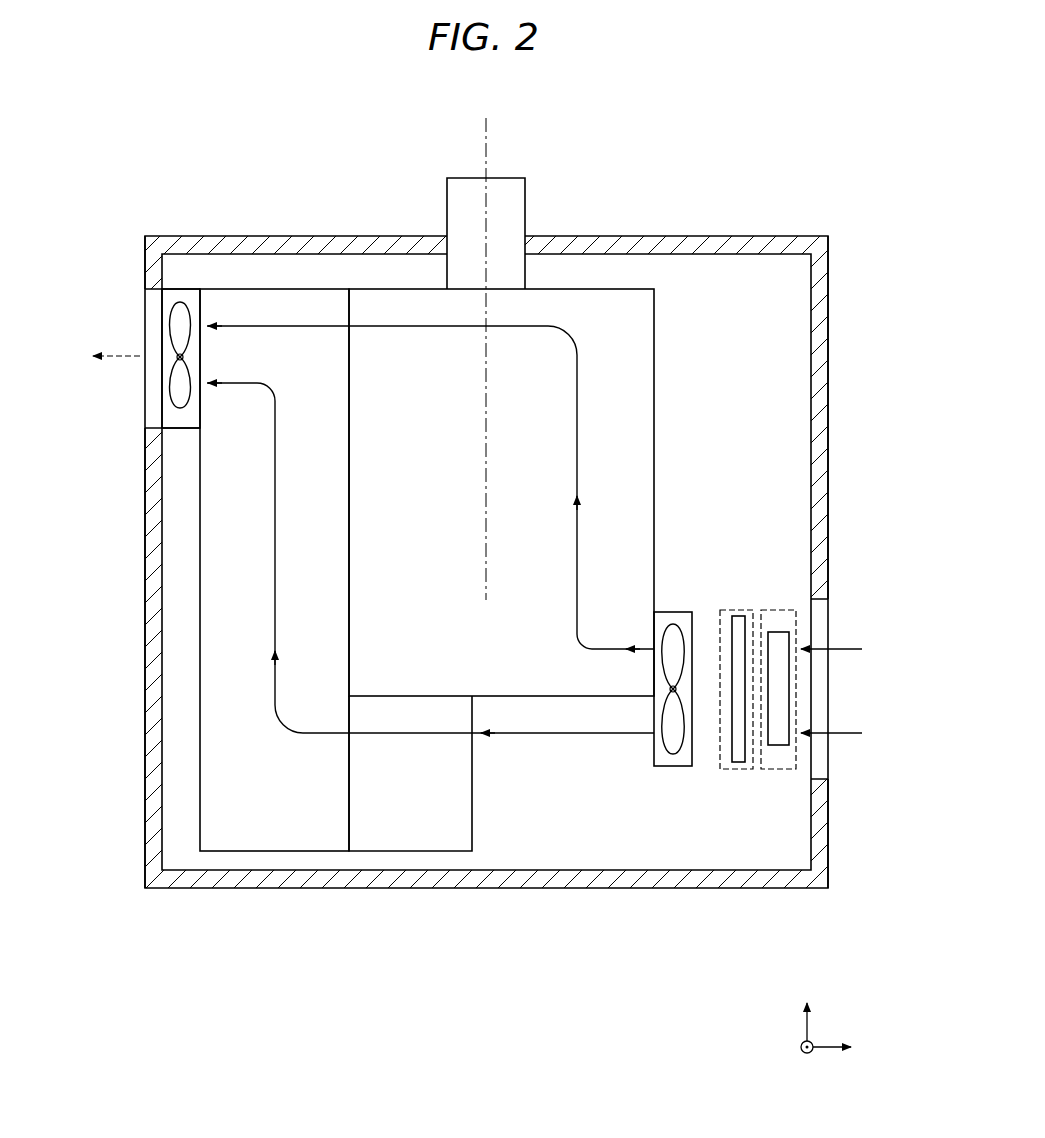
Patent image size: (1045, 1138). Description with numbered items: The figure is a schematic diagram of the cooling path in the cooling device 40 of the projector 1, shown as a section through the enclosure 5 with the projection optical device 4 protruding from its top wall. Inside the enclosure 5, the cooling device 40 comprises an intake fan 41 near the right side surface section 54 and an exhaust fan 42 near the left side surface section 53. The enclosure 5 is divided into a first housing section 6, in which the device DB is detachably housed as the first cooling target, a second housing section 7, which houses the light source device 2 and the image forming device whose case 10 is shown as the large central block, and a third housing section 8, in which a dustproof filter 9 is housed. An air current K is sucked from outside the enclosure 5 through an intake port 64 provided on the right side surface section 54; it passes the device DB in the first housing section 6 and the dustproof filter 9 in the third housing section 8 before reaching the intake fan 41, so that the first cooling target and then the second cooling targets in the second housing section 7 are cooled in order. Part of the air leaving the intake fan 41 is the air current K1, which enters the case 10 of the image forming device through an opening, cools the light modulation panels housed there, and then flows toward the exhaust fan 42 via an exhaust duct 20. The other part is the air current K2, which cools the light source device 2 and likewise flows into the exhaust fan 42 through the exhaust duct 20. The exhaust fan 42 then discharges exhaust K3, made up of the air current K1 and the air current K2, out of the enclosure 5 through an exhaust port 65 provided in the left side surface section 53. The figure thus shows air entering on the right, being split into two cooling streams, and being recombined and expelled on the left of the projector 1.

The projector 1 is at (827, 175).
The light source device 2 is at (402, 851).
The projection optical device 4 is at (500, 190).
The enclosure 5 is at (742, 232).
The first housing section 6 is at (777, 770).
The second housing section 7 is at (522, 565).
The third housing section 8 is at (738, 770).
The dustproof filter 9 is at (735, 740).
The case 10 is at (630, 288).
The exhaust duct 20 is at (258, 851).
The cooling device 40 is at (427, 551).
The intake fan 41 is at (670, 766).
The exhaust fan 42 is at (186, 289).
The left side surface section 53 is at (152, 745).
The right side surface section 54 is at (820, 405).
The intake port 64 is at (818, 781).
The exhaust port 65 is at (157, 290).
The device DB is at (787, 640).
The air current K is at (838, 733).
The air current K1 is at (587, 642).
The air current K2 is at (548, 735).
The exhaust K3 is at (118, 358).